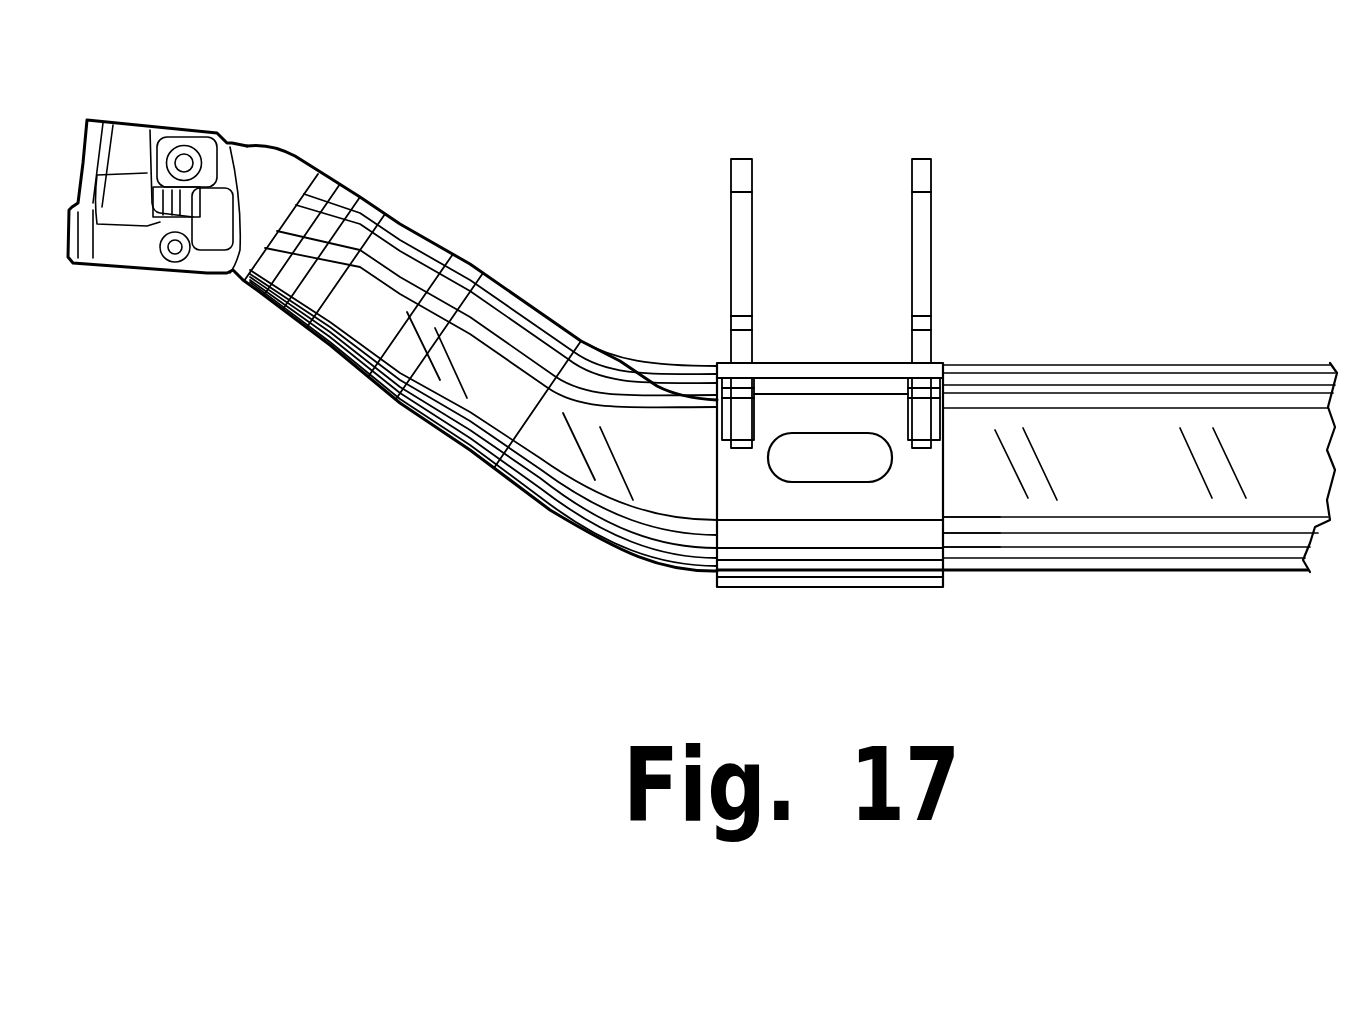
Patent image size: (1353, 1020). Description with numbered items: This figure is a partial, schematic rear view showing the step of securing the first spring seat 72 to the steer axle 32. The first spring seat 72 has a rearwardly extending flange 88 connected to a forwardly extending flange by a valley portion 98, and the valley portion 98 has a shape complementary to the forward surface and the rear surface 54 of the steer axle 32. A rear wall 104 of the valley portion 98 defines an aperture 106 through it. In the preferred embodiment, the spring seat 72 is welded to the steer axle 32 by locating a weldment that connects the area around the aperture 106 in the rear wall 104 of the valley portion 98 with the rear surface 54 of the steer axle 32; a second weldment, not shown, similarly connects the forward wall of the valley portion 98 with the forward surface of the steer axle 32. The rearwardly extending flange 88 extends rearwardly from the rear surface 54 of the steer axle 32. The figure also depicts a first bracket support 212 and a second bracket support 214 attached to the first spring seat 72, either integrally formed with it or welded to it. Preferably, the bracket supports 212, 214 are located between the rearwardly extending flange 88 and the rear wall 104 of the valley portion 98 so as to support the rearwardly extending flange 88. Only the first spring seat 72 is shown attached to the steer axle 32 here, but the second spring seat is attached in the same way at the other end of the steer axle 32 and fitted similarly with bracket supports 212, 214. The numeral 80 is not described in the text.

The steer axle 32 is at (1118, 385).
The rear surface 54 is at (1008, 432).
The first spring seat 72 is at (763, 548).
The U-bolt fastener 80 is at (922, 158).
The rearwardly extending flange 88 is at (743, 375).
The valley portion 98 is at (962, 532).
The rear wall 104 is at (743, 478).
The aperture 106 is at (847, 478).
The first bracket support 212 is at (630, 363).
The second bracket support 214 is at (902, 405).